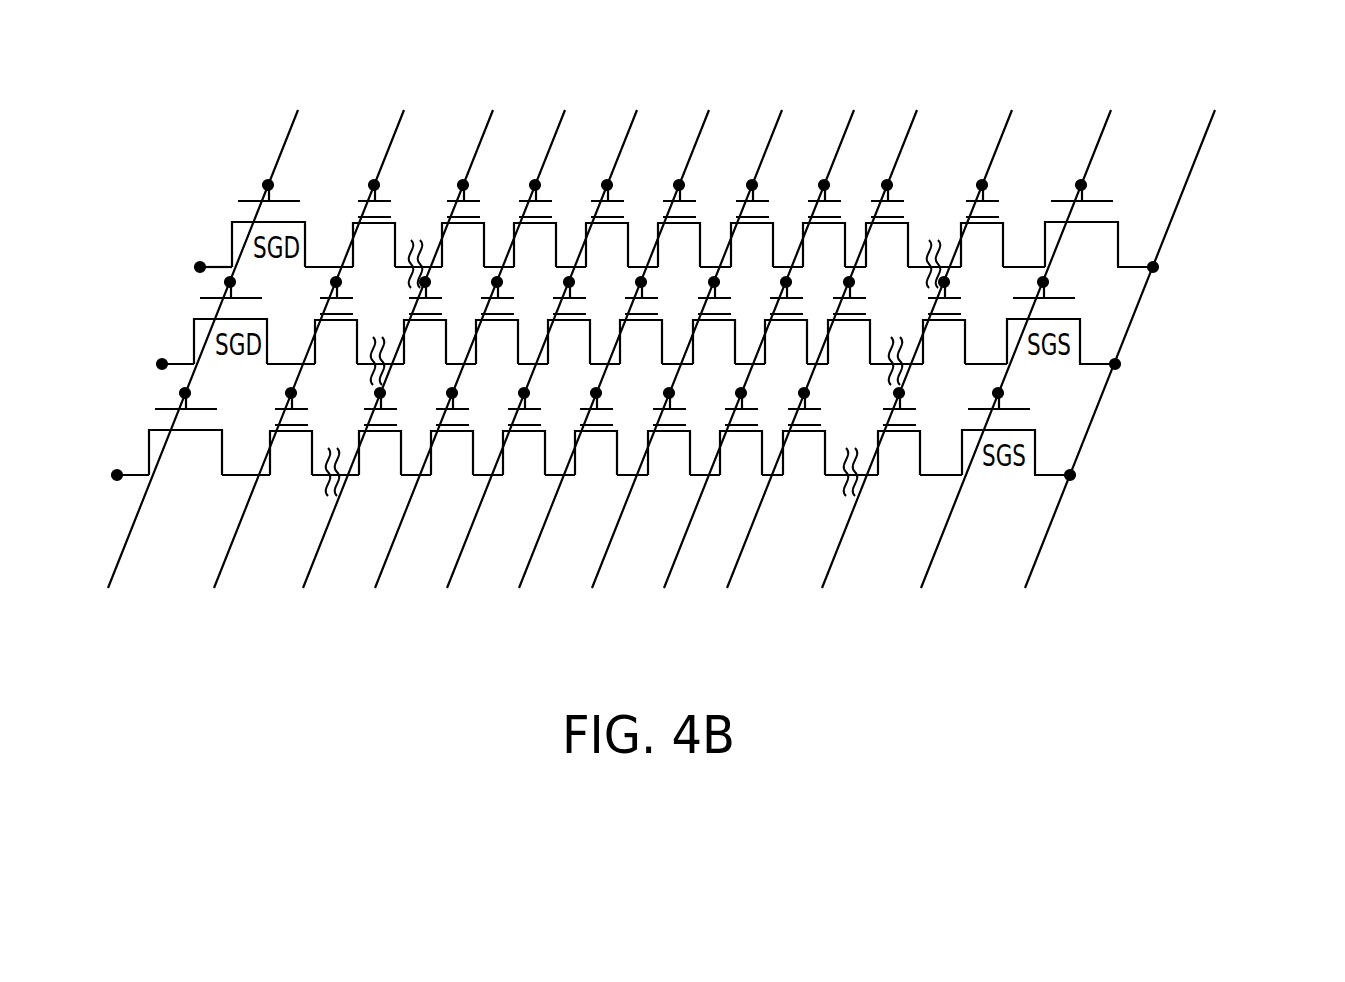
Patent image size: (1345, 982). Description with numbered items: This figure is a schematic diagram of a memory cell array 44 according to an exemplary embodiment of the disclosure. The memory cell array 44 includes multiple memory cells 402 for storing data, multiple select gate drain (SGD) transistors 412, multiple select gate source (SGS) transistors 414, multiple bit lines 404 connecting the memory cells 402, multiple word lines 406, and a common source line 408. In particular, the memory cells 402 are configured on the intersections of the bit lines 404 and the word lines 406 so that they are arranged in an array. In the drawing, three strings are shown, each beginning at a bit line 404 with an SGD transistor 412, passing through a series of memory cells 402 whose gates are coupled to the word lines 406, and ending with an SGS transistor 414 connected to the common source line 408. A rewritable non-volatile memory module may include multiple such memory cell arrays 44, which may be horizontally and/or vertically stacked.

The memory cell 402 is at (355, 203).
The bit line 404 is at (214, 243).
The word line 406 is at (437, 74).
The common source line 408 is at (1237, 92).
The select gate drain (SGD) transistor 412 is at (193, 499).
The select gate source (SGS) transistor 414 is at (1137, 236).
The memory cell array 44 is at (1264, 653).